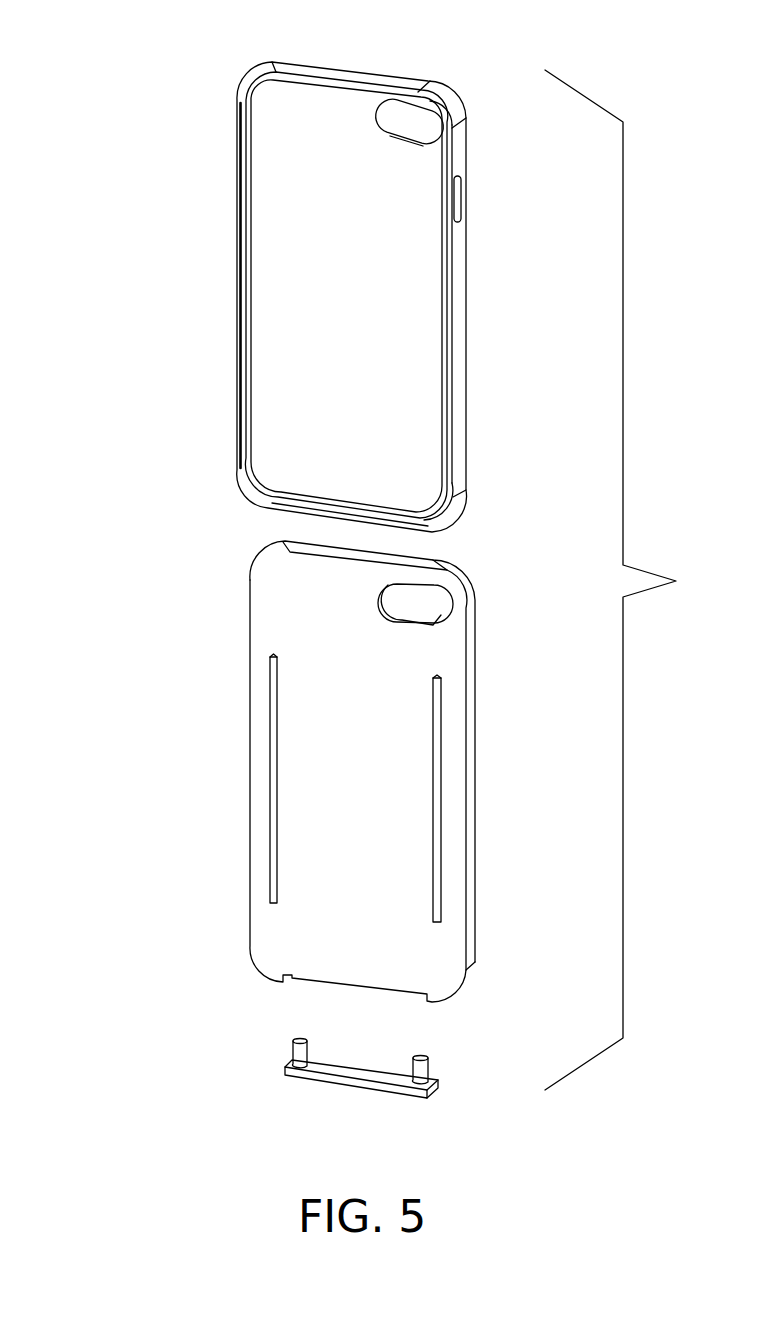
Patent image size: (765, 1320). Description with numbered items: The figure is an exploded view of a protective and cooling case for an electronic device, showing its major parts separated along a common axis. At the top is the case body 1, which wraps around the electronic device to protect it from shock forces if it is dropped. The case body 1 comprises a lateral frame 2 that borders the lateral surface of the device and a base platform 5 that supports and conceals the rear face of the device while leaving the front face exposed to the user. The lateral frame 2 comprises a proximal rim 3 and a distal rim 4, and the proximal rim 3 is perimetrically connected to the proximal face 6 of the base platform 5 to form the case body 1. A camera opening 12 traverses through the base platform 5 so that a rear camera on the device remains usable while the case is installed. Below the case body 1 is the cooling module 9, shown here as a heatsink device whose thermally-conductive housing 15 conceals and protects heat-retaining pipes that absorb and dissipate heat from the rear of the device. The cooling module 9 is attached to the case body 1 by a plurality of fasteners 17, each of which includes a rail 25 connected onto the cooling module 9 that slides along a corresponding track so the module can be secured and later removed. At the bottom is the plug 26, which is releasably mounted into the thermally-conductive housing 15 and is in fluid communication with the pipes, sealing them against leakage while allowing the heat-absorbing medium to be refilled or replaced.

The case body 1 is at (158, 33).
The lateral frame 2 is at (222, 227).
The proximal rim 3 is at (252, 152).
The distal rim 4 is at (243, 82).
The base platform 5 is at (477, 297).
The proximal face 6 is at (350, 323).
The cooling module 9 is at (212, 549).
The camera opening 12 is at (401, 123).
The thermally-conductive housing 15 is at (255, 636).
The fasteners 17 is at (278, 737).
The rail 25 is at (434, 818).
The plug 26 is at (287, 1068).